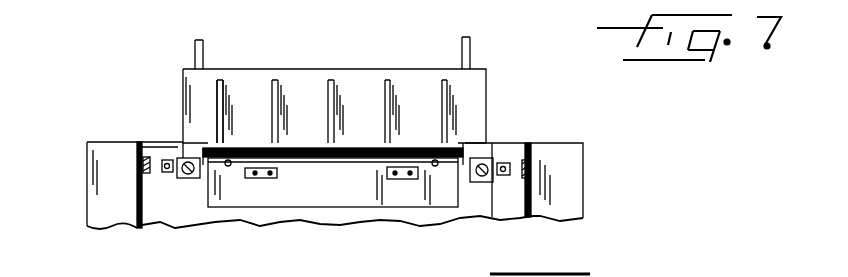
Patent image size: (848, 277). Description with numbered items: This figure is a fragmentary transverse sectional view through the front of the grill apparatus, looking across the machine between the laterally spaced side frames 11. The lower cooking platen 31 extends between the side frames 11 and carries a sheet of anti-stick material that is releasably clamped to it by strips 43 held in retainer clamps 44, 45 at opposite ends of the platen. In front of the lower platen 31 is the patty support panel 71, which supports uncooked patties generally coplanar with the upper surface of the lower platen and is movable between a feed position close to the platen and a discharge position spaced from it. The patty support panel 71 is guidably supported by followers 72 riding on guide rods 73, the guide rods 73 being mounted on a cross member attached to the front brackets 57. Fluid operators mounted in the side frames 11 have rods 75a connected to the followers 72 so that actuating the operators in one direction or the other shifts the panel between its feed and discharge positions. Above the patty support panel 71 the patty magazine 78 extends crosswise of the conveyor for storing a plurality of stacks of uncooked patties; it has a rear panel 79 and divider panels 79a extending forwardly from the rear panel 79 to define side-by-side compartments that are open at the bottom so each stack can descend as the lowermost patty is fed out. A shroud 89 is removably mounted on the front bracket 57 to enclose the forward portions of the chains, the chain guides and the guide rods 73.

The side frames 11 is at (93, 162).
The lower cooking platen 31 is at (363, 195).
The strips 43 is at (322, 163).
The retainer clamp 44 is at (348, 158).
The retainer clamp 45 is at (258, 176).
The front brackets 57 is at (537, 146).
The patty support panel 71 is at (348, 158).
The followers 72 is at (170, 180).
The guide rods 73 is at (175, 140).
The rods 75a is at (158, 182).
The patty magazine 78 is at (305, 88).
The rear panel 79 is at (247, 78).
The divider panels 79a is at (220, 90).
The shroud 89 is at (505, 142).